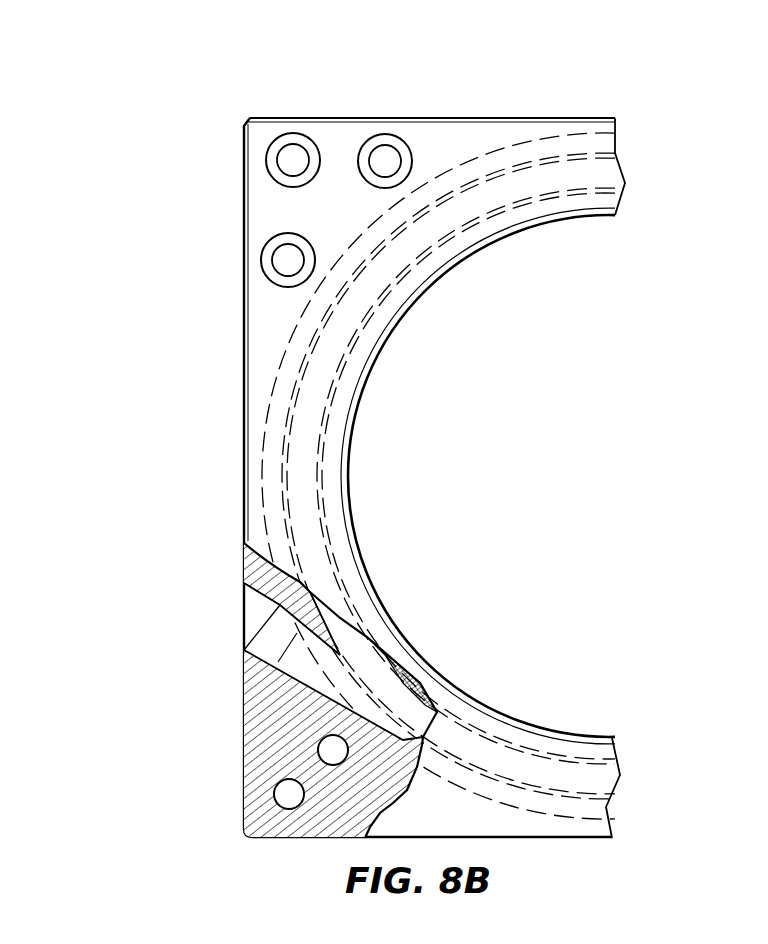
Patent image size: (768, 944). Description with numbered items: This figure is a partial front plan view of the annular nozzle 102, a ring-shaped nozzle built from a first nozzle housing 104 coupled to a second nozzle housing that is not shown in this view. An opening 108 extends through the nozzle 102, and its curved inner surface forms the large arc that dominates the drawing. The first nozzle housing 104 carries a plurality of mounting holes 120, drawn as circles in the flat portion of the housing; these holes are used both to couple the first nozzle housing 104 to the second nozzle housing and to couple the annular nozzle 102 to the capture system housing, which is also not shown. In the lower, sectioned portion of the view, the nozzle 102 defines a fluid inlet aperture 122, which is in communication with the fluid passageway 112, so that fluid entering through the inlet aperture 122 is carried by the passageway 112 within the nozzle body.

The annular nozzle 102 is at (567, 62).
The first nozzle housing 104 is at (462, 119).
The opening 108 is at (588, 250).
The fluid passageway 112 is at (297, 674).
The mounting holes 120 is at (385, 158).
The fluid inlet aperture 122 is at (228, 616).